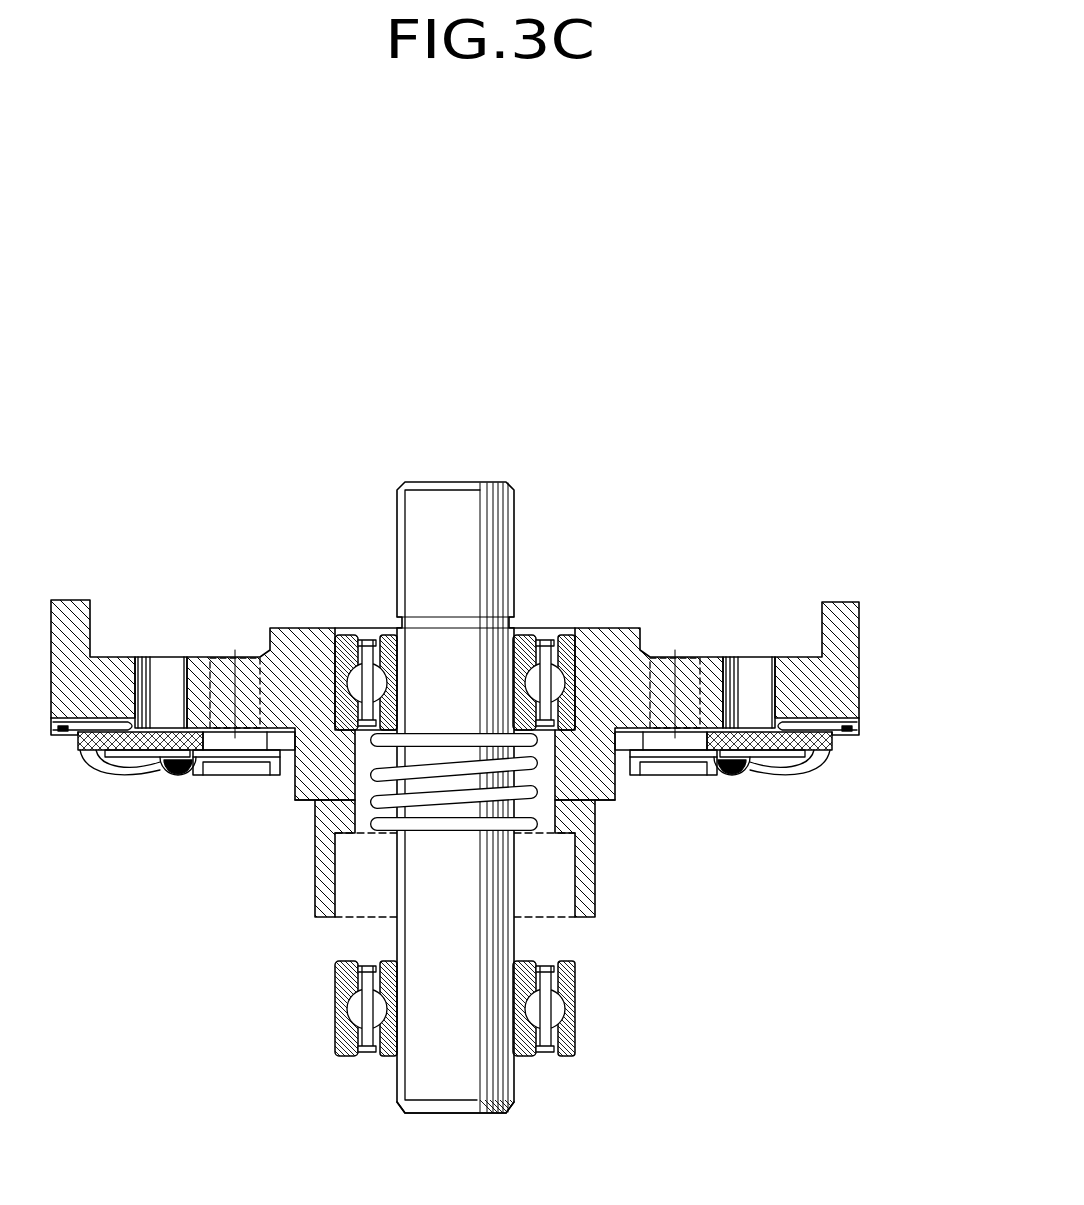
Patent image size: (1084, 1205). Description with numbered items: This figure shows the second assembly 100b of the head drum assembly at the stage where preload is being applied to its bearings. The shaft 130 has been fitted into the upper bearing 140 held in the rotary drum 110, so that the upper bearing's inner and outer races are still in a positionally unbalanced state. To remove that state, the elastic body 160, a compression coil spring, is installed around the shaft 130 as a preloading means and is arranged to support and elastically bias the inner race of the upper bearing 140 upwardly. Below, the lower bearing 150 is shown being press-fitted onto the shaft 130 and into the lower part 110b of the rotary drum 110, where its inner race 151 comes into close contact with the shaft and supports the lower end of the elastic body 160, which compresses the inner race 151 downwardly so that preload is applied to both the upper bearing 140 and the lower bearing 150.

The second assembly 100b is at (302, 528).
The rotary drum 110 is at (845, 667).
The lower housing portion 110b is at (553, 924).
The shaft 130 is at (455, 498).
The upper bearing 140 is at (560, 614).
The lower bearing 150 is at (320, 1059).
The inner race 151 is at (511, 1075).
The elastic body 160 is at (374, 848).